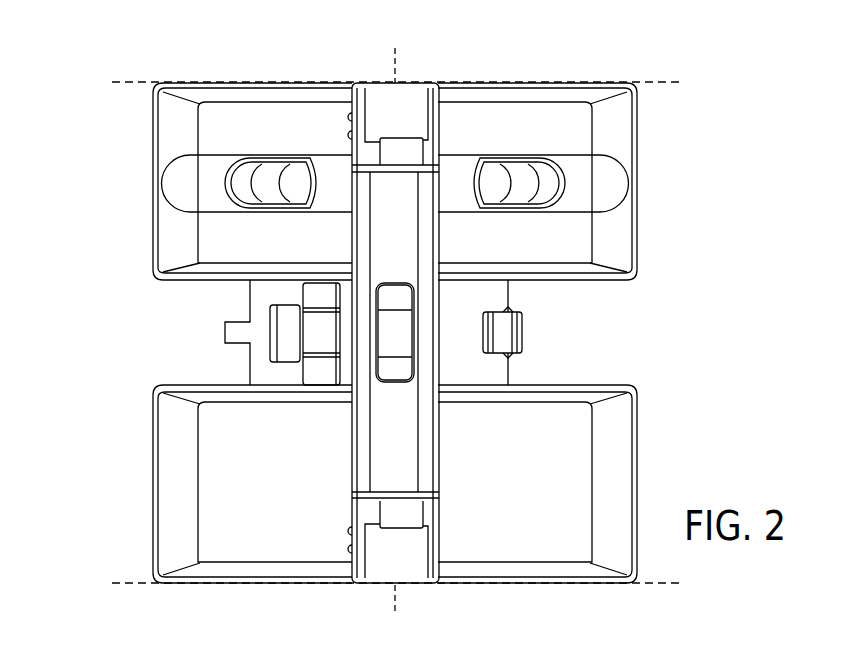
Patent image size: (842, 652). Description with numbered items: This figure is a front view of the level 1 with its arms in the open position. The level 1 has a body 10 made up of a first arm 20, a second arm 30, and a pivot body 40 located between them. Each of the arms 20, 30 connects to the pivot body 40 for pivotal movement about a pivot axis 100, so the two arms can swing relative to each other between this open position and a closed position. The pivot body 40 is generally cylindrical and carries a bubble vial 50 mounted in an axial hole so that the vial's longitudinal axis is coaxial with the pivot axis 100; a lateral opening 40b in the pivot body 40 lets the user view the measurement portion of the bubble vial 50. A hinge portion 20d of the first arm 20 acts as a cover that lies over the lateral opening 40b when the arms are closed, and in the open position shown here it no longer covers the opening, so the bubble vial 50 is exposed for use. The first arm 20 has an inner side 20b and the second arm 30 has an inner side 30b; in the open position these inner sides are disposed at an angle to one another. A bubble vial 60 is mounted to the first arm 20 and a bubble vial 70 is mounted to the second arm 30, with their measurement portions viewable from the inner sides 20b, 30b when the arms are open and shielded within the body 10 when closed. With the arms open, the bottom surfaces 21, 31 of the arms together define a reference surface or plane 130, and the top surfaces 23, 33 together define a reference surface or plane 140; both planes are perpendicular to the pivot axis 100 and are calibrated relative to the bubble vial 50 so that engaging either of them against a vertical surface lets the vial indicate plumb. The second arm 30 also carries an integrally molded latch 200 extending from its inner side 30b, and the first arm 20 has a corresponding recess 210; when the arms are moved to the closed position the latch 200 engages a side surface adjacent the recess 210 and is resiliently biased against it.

The level 1 is at (108, 192).
The body 10 is at (390, 328).
The first arm 20 is at (258, 122).
The inner side of first arm 20b is at (252, 155).
The hinge portion 20d is at (425, 425).
The bottom surface of first arm 21 is at (208, 587).
The top surface of first arm 23 is at (183, 84).
The second arm 30 is at (573, 125).
The inner side of second arm 30b is at (537, 151).
The bottom surface of second arm 31 is at (595, 585).
The top surface of second arm 33 is at (505, 83).
The pivot body 40 is at (410, 93).
The lateral opening 40b is at (417, 328).
The bubble vial 50 is at (398, 322).
The bubble vial 60 is at (272, 177).
The bubble vial 70 is at (521, 190).
The pivot axis 100 is at (398, 595).
The reference surface or plane 130 is at (130, 580).
The reference surface or plane 140 is at (132, 80).
The latch 200 is at (525, 337).
The recess 210 is at (325, 333).